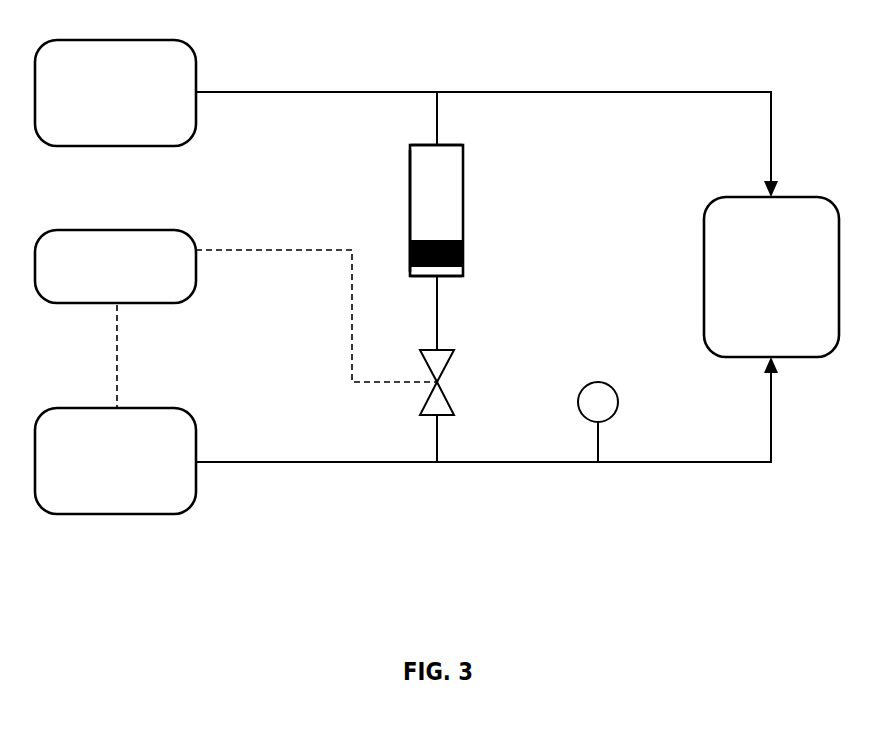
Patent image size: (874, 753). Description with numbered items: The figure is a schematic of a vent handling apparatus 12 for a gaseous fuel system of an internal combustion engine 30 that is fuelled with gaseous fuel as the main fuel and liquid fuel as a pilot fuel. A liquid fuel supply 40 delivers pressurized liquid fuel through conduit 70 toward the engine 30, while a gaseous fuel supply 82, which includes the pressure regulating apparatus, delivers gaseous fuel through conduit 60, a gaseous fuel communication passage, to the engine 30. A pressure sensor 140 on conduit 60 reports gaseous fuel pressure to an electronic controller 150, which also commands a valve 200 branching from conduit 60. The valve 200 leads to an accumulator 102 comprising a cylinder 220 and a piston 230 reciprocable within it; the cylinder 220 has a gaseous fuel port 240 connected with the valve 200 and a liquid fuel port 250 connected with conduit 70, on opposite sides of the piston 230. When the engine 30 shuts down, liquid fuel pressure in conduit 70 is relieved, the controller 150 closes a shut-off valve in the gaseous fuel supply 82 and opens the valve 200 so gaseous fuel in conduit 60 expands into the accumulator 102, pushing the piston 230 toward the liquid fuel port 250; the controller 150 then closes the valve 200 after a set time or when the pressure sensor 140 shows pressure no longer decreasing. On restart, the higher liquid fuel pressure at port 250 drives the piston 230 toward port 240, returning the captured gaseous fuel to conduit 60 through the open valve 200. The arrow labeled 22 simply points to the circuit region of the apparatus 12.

The vent handling apparatus 12 is at (497, 294).
The fluid circuit 22 is at (620, 295).
The internal combustion engine 30 is at (771, 277).
The liquid fuel supply 40 is at (115, 93).
The conduit 60 is at (557, 462).
The conduit 70 is at (558, 92).
The gaseous fuel supply 82 is at (115, 461).
The accumulator 102 is at (463, 208).
The pressure sensor 140 is at (578, 397).
The electronic controller 150 is at (115, 266).
The valve 200 is at (443, 377).
The cylinder 220 is at (410, 177).
The piston 230 is at (440, 240).
The gaseous fuel port 240 is at (437, 277).
The liquid fuel port 250 is at (437, 143).